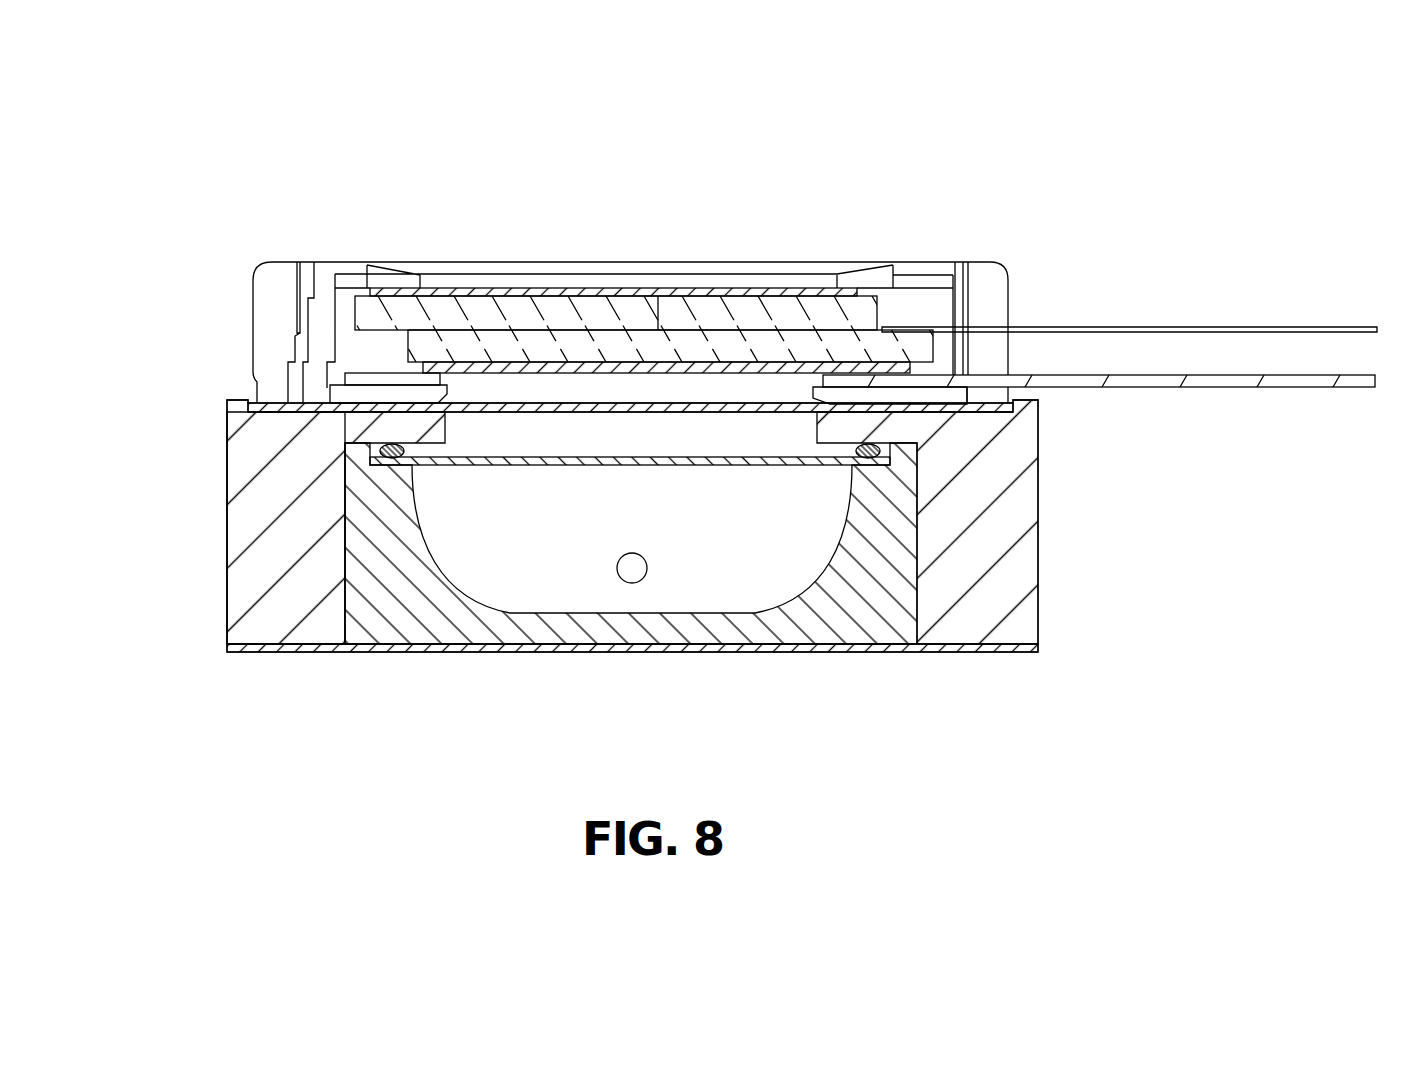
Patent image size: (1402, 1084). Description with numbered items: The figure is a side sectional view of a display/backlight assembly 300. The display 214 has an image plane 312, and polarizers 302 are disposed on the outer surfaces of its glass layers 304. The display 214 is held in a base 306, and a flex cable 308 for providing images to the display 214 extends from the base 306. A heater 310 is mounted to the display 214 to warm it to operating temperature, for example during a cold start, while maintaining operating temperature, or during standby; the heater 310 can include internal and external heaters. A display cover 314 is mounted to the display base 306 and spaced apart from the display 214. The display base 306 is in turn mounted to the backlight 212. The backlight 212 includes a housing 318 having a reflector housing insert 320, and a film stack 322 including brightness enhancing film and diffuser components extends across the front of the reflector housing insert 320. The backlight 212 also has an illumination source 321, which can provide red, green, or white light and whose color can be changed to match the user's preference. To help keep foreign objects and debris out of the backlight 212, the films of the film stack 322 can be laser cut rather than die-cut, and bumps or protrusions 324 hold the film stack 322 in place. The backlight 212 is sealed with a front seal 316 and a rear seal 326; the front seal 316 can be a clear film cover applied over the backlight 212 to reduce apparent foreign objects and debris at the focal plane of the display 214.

The backlight 212 is at (152, 582).
The display 214 is at (417, 290).
The display/backlight assembly 300 is at (1187, 643).
The polarizers 302 is at (715, 292).
The glass layers 304 is at (380, 313).
The base 306 is at (987, 265).
The flex cable 308 is at (1192, 327).
The heater 310 is at (1148, 388).
The image plane 312 is at (553, 328).
The display cover 314 is at (930, 413).
The front seal 316 is at (275, 452).
The housing 318 is at (263, 602).
The reflector housing insert 320 is at (838, 627).
The illumination source 321 is at (637, 558).
The film stack 322 is at (587, 467).
The bumps or protrusions 324 is at (393, 462).
The rear seal 326 is at (663, 653).